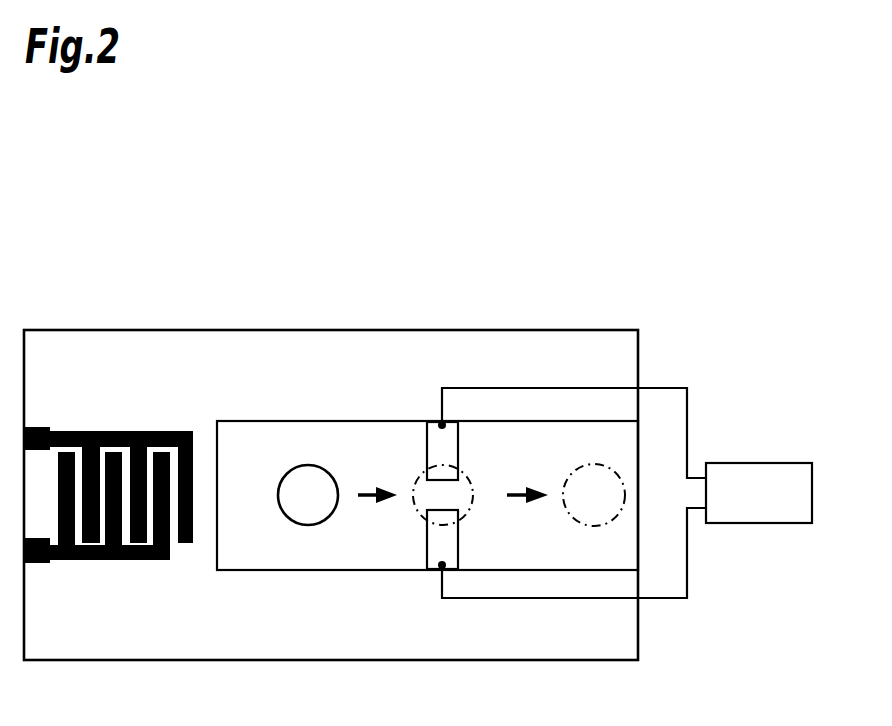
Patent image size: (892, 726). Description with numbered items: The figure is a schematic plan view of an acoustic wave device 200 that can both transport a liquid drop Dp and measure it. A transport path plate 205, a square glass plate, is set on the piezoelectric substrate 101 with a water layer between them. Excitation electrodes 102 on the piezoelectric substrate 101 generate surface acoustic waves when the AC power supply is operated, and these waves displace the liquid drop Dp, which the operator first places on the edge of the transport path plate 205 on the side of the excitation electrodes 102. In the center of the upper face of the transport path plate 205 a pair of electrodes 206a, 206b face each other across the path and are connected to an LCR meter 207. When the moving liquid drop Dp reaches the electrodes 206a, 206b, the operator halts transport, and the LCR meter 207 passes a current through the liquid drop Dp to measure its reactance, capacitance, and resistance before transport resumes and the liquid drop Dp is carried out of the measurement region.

The acoustic wave device 200 is at (436, 298).
The piezoelectric substrate 101 is at (202, 330).
The excitation electrodes 102 is at (120, 420).
The transport path plate 205 is at (280, 420).
The liquid drop Dp is at (301, 523).
The electrode 206a is at (458, 445).
The electrode 206b is at (458, 545).
The LCR meter 207 is at (780, 462).